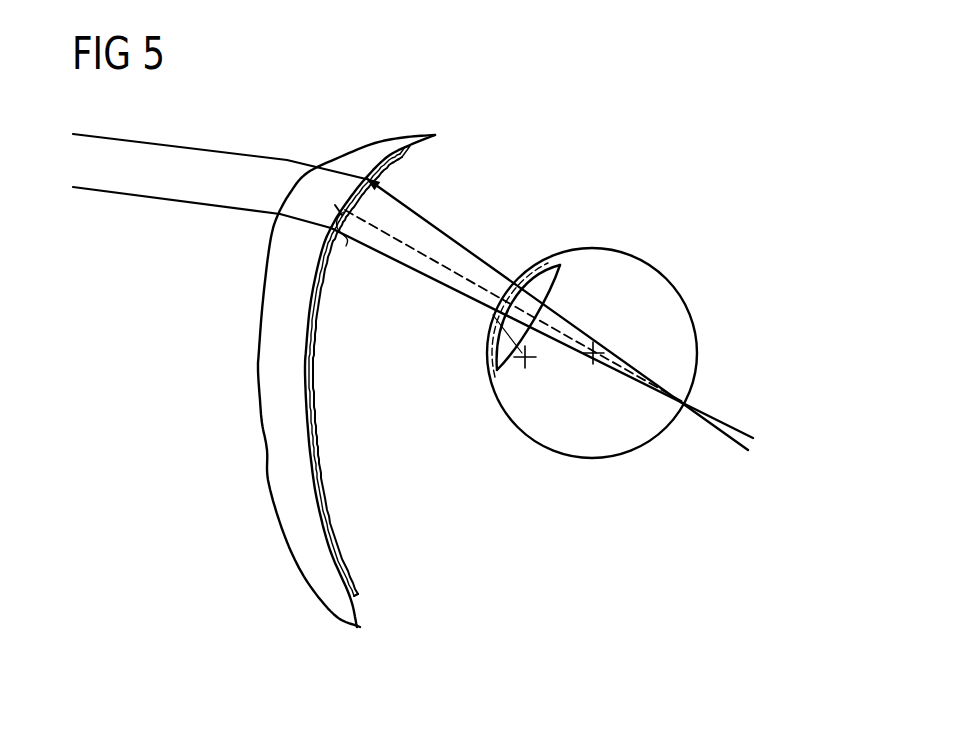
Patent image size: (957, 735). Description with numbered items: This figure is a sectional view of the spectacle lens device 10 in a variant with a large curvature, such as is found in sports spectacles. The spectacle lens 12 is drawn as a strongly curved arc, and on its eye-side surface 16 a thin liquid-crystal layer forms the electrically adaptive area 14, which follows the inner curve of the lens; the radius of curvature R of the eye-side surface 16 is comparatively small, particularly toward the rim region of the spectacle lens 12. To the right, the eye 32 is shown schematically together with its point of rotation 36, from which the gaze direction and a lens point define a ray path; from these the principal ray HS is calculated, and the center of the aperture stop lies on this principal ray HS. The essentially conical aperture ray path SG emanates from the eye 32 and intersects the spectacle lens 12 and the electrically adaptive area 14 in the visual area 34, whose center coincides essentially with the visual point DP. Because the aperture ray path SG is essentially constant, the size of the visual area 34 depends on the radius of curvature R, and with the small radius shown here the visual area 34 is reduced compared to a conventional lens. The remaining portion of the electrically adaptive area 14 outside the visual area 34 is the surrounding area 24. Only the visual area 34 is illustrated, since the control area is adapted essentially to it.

The spectacle lens device 10 is at (296, 119).
The spectacle lens 12 is at (278, 368).
The electrically adaptive area 14 is at (331, 537).
The eye-side surface 16 is at (366, 612).
The surrounding area 24 is at (312, 350).
The eye 32 is at (615, 435).
The visual area 34 is at (346, 246).
The eye's point of rotation 36 is at (594, 353).
The visual point DP is at (338, 210).
The aperture ray path SG is at (456, 256).
The principal ray HS is at (433, 260).
The radius of curvature R is at (462, 292).